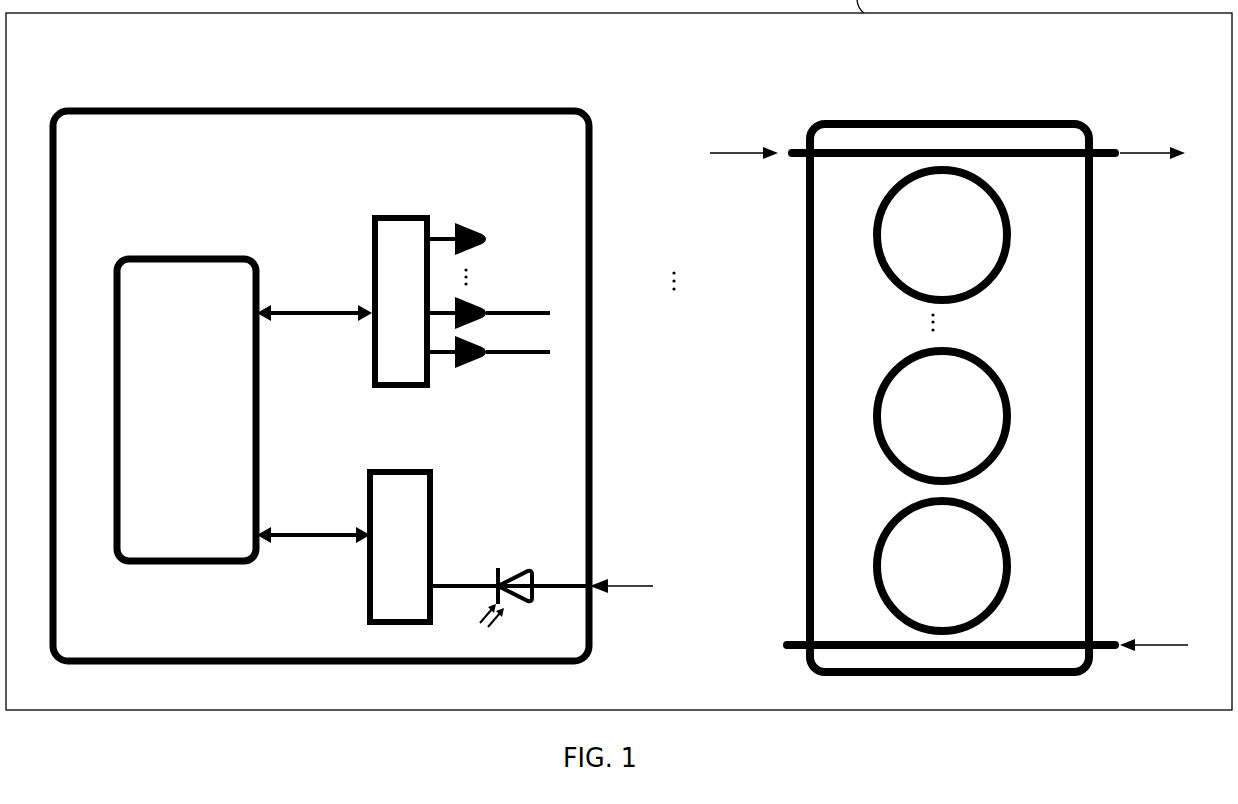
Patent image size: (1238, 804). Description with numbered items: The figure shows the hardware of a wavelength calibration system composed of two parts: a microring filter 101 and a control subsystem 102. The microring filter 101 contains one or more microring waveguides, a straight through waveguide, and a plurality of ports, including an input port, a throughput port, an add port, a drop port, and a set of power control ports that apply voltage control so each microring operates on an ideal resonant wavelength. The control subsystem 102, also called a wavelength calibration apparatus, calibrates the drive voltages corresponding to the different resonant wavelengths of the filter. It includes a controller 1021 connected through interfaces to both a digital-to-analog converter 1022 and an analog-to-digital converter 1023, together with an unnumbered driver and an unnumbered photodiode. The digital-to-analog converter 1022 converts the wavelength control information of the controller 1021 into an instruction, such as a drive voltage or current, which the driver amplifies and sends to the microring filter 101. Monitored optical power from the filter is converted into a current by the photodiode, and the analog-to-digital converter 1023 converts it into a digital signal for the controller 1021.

The microring filter 101 is at (918, 120).
The control subsystem 102 is at (305, 107).
The controller 1021 is at (153, 257).
The digital-to-analog converter 1022 is at (395, 215).
The analog-to-digital converter 1023 is at (392, 470).